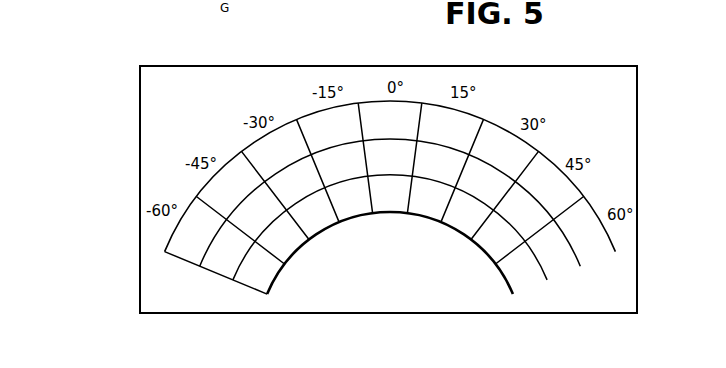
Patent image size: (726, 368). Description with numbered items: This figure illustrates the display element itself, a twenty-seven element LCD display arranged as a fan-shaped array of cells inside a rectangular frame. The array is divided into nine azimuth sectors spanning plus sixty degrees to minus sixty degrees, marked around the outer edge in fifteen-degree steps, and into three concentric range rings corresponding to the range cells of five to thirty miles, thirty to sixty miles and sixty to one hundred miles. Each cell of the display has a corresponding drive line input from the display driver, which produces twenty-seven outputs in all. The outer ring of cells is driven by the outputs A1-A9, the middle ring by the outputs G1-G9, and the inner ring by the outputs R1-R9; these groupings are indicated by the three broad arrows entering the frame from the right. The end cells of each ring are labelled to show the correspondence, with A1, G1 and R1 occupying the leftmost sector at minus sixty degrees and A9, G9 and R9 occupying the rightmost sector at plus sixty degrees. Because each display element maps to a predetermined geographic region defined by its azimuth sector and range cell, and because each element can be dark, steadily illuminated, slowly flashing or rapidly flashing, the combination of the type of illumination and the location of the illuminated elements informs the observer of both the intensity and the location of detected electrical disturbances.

The display element drive line A1 is at (182, 232).
The display element drive line G1 is at (216, 246).
The display element drive line R1 is at (250, 263).
The display element drive line A9 is at (597, 232).
The display element drive line G9 is at (563, 246).
The display element drive line R9 is at (529, 263).
The display driver outputs A1-A9 is at (725, 99).
The display driver outputs R1-R9 is at (725, 171).
The display driver outputs G1-G9 is at (725, 243).